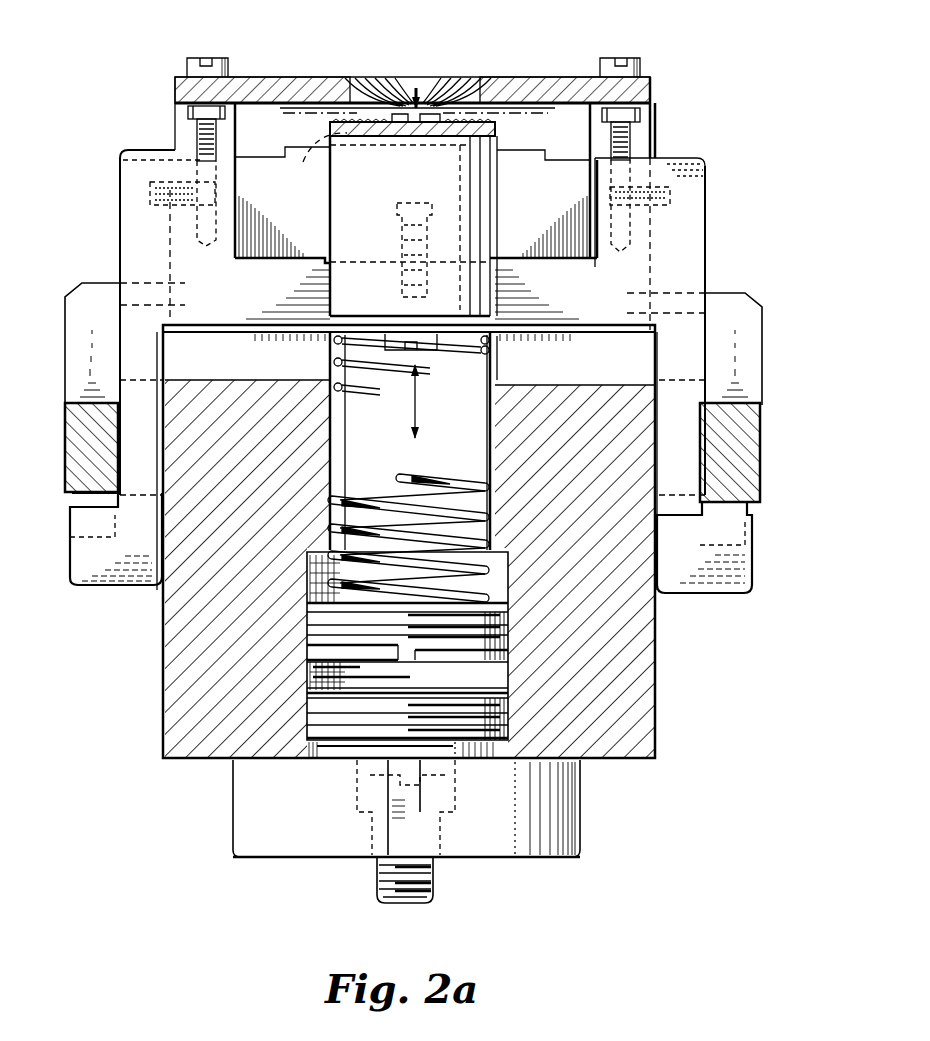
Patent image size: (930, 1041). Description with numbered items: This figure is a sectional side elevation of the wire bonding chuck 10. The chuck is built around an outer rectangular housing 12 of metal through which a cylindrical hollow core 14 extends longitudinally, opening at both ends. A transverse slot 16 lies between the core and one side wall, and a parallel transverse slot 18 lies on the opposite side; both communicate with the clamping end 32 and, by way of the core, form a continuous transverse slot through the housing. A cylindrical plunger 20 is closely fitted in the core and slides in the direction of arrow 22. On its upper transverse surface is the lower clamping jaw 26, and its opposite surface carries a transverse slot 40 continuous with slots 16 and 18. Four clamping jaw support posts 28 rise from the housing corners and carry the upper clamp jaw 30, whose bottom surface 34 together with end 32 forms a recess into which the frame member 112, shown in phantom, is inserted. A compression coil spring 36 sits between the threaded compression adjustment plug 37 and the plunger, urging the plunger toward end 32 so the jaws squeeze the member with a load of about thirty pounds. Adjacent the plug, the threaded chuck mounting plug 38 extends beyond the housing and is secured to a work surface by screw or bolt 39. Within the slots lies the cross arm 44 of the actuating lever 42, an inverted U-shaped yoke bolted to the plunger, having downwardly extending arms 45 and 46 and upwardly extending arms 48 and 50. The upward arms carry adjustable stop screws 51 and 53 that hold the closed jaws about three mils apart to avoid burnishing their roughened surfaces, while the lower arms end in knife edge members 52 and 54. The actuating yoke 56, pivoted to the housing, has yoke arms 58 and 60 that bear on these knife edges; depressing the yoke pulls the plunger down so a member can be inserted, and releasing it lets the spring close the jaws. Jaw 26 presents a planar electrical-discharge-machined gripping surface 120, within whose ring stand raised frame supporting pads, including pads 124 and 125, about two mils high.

The wire bonding chuck 10 is at (670, 127).
The outer rectangular housing 12 is at (178, 665).
The cylindrical hollow core 14 is at (324, 207).
The transverse slot 16 is at (652, 147).
The transverse slot 18 is at (178, 132).
The cylindrical plunger 20 is at (400, 186).
The arrow 22 is at (412, 408).
The lower clamping jaw 26 is at (420, 84).
The clamping jaw support posts 28 is at (176, 106).
The upper clamp jaw 30 is at (272, 72).
The clamping end 32 is at (316, 167).
The bottom surface of upper clamp jaw 34 is at (262, 104).
The compression coil spring 36 is at (445, 483).
The threaded compression adjustment plug 37 is at (320, 640).
The threaded chuck mounting plug 38 is at (320, 822).
The screw or bolt 39 is at (434, 882).
The transverse slot 40 is at (385, 280).
The actuating lever 42 is at (710, 222).
The cross arm 44 is at (522, 312).
The downwardly extending arm 45 is at (665, 440).
The downwardly extending arm 46 is at (150, 498).
The upwardly extending arm 48 is at (612, 210).
The upwardly extending arm 50 is at (222, 222).
The adjustable stop screw 51 is at (622, 140).
The knife edge member 52 is at (745, 560).
The adjustable stop screw 53 is at (205, 148).
The knife edge member 54 is at (80, 570).
The actuating yoke 56 is at (80, 292).
The yoke arm 58 is at (65, 398).
The yoke arm 60 is at (762, 404).
The frame member 112 is at (556, 103).
The first gripping surface 120 is at (378, 100).
The frame supporting pad 124 is at (440, 100).
The frame supporting pad 125 is at (405, 106).